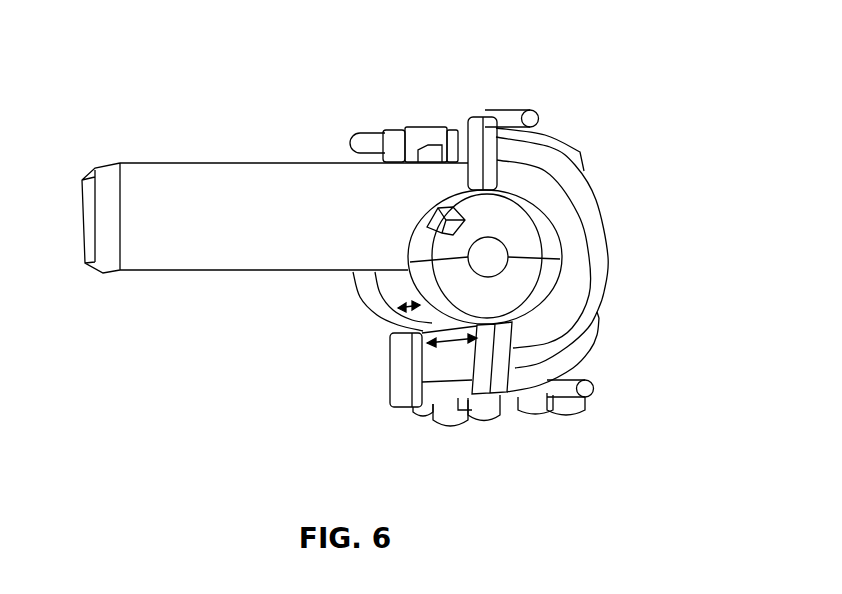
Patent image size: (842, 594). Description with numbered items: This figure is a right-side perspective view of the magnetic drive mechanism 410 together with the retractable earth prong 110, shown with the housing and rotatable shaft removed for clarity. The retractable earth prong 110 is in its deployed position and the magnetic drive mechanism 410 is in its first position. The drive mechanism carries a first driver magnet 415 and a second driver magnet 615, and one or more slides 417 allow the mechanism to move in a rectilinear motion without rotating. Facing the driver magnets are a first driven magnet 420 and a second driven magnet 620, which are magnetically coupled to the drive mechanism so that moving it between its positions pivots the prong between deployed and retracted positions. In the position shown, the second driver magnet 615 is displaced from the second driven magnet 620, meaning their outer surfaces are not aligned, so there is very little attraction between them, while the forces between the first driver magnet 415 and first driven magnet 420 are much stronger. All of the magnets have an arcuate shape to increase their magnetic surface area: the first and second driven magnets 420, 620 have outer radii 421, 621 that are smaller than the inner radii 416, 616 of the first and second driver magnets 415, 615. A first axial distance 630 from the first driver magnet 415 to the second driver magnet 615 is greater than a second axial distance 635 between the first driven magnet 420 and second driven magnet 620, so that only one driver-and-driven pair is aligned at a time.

The retractable earth prong 110 is at (160, 188).
The magnetic drive mechanism 410 is at (493, 256).
The first driver magnet 415 is at (437, 352).
The inner radius of first driver magnet 416 is at (424, 342).
The slides 417 is at (365, 143).
The first driven magnet 420 is at (365, 298).
The outer radius of first driven magnet 421 is at (365, 287).
The second driver magnet 615 is at (567, 210).
The inner radius of second driver magnet 616 is at (556, 310).
The second driven magnet 620 is at (525, 290).
The outer radius of second driven magnet 621 is at (508, 257).
The first axial distance 630 is at (407, 392).
The second axial distance 635 is at (397, 313).